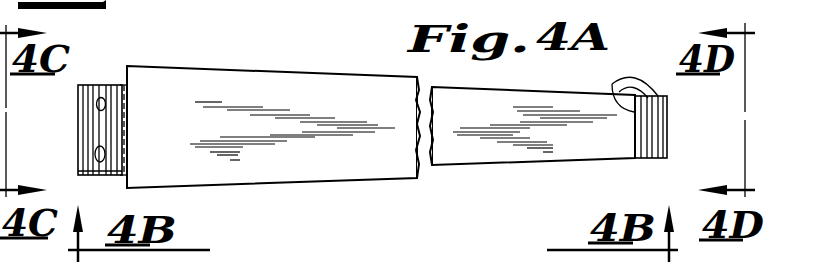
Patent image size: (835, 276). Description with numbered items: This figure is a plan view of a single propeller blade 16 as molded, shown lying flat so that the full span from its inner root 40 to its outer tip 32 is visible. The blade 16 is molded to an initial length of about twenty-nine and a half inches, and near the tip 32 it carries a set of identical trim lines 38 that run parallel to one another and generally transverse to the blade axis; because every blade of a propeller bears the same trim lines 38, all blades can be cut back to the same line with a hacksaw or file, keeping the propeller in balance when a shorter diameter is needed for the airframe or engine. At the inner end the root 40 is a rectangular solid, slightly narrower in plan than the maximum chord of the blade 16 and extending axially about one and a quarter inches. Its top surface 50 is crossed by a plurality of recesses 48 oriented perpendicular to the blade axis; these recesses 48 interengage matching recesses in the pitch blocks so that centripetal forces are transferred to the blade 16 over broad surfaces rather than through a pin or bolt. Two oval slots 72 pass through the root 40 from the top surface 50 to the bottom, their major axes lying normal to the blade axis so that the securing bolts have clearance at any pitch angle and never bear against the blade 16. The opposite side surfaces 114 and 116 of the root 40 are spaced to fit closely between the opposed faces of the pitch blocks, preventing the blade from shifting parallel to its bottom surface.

The blade 16 is at (290, 64).
The root 40 is at (97, 75).
The surface of the root 116 is at (118, 84).
The surface of the root 114 is at (124, 176).
The slots 72 is at (97, 103).
The top surface of the root 50 is at (93, 120).
The recesses 48 is at (89, 172).
The tip 32 is at (667, 122).
The trim lines 38 is at (627, 87).